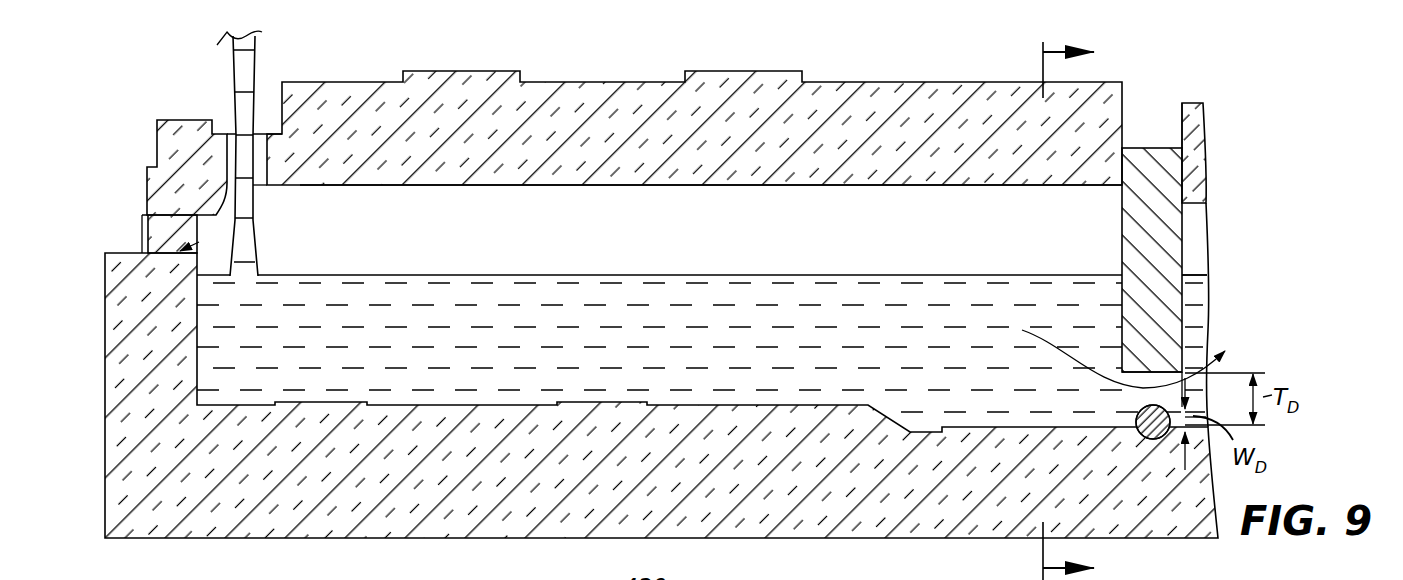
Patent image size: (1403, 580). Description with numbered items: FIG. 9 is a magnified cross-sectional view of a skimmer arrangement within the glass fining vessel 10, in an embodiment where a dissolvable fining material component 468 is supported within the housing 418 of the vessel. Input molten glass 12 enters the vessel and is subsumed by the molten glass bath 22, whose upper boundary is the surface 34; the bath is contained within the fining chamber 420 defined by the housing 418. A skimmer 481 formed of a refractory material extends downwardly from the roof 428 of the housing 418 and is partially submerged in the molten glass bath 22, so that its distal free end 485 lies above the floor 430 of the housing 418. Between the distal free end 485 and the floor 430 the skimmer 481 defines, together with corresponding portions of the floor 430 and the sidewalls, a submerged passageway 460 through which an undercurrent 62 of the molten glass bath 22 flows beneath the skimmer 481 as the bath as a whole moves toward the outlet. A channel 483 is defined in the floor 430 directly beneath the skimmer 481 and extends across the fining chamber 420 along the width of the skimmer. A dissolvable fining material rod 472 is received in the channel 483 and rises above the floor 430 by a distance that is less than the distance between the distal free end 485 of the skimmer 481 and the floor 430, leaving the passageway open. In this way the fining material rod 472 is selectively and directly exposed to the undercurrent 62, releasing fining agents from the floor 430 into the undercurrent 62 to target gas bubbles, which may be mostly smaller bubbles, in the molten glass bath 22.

The glass fining vessel 10 is at (1094, 306).
The input molten glass 12 is at (247, 67).
The molten glass bath 22 is at (700, 340).
The surface of the molten glass bath 34 is at (703, 275).
The undercurrent 62 is at (1072, 352).
The housing 418 is at (141, 198).
The fining chamber 420 is at (360, 186).
The roof 428 is at (932, 97).
The floor 430 is at (757, 525).
The submerged passageway 460 is at (1125, 417).
The dissolvable fining material component 468 is at (1146, 433).
The dissolvable fining material rod 472 is at (1142, 412).
The skimmer 481 is at (1120, 213).
The channel 483 is at (1162, 440).
The distal free end 485 is at (1140, 378).